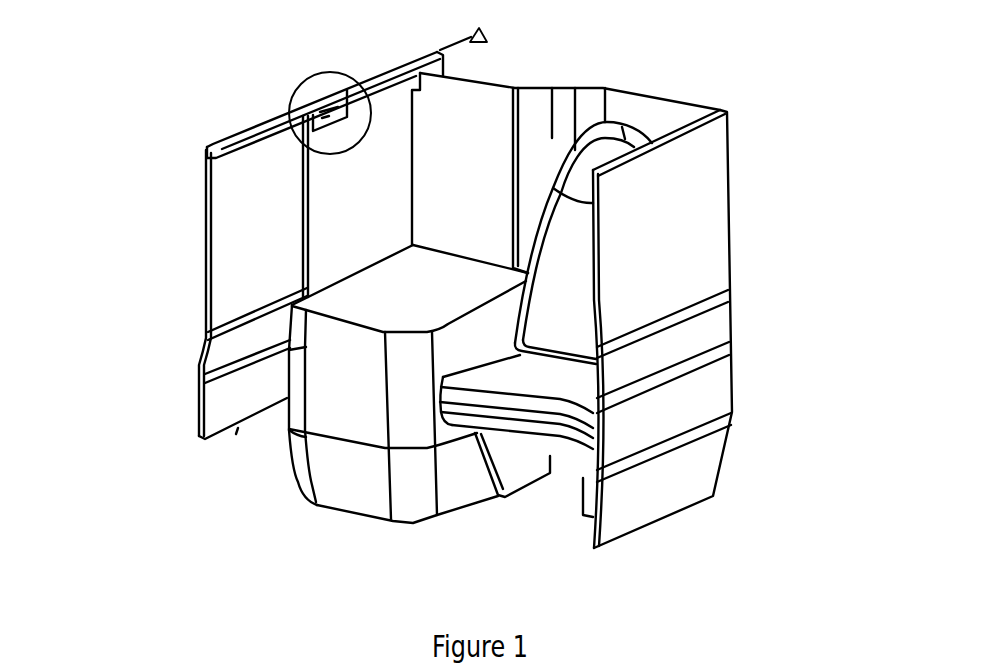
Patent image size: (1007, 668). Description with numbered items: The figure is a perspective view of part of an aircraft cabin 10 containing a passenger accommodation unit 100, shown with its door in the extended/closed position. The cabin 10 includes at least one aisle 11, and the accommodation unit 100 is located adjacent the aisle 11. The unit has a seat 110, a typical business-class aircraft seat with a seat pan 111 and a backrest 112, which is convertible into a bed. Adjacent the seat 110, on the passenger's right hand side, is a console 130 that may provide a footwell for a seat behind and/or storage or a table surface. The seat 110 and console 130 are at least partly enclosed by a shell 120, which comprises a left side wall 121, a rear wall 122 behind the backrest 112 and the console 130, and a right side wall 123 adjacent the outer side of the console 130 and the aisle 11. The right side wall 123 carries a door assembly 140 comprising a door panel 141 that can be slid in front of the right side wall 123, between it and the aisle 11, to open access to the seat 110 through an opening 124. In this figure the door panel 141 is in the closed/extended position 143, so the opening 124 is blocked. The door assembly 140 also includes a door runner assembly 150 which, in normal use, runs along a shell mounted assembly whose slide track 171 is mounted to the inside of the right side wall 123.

The aircraft cabin 10 is at (897, 6).
The aisle 11 is at (177, 384).
The passenger accommodation unit 100 is at (660, 58).
The seat 110 is at (532, 494).
The seat pan 111 is at (548, 385).
The backrest 112 is at (562, 300).
The shell 120 is at (730, 132).
The left side wall 121 is at (720, 398).
The rear wall 122 is at (530, 102).
The right side wall 123 is at (389, 120).
The opening 124 is at (238, 428).
The console 130 is at (347, 488).
The door assembly 140 is at (223, 110).
The door panel 141 is at (222, 240).
The closed/extended position 143 is at (253, 277).
The door runner assembly 150 is at (308, 75).
The slide track 171 is at (408, 70).